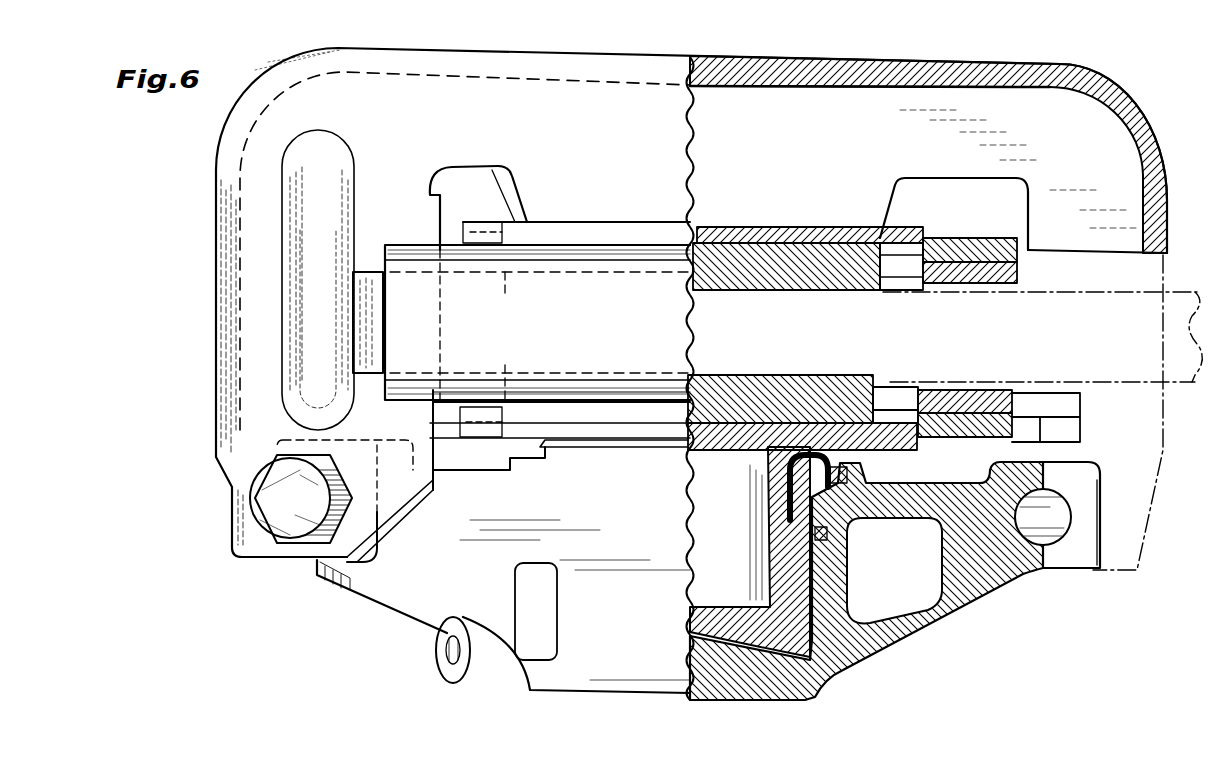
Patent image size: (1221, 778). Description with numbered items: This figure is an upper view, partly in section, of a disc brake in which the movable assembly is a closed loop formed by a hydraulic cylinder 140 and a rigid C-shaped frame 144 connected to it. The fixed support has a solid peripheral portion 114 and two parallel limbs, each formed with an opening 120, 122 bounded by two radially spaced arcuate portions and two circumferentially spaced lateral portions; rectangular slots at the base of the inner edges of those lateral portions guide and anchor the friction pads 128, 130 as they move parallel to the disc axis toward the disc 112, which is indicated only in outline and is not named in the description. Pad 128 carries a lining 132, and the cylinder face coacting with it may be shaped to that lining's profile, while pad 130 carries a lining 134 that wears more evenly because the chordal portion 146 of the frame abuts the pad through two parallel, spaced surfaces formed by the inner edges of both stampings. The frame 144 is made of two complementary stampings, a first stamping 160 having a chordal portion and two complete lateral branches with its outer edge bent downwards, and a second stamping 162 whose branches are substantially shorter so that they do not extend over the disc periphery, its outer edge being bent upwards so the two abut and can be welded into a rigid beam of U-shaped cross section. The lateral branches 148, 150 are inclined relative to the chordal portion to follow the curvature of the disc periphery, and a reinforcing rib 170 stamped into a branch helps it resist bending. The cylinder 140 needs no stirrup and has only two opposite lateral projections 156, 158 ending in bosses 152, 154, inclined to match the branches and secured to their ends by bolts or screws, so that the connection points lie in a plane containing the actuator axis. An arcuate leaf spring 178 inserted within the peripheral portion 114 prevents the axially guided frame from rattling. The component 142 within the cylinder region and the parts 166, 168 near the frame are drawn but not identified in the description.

The shaft 112 is at (1187, 378).
The solid peripheral portion 114 is at (660, 336).
The opening 120 is at (902, 395).
The opening 122 is at (906, 278).
The friction pad 128 is at (905, 448).
The friction pad 130 is at (912, 235).
The lining 132 is at (855, 380).
The lining 134 is at (836, 283).
The hydraulic cylinder 140 is at (503, 541).
The lever 142 is at (767, 615).
The rigid C-shaped frame 144 is at (1124, 95).
The chordal portion 146 is at (868, 95).
The lateral branch 148 is at (240, 242).
The lateral branch 150 is at (1150, 273).
The boss 152 is at (358, 562).
The boss 154 is at (1077, 556).
The lateral projection 156 is at (408, 612).
The lateral projection 158 is at (958, 607).
The first stamping 160 is at (598, 155).
The second stamping 162 is at (771, 155).
The bracket 166 is at (471, 176).
The bracket 168 is at (930, 190).
The reinforcing rib 170 is at (300, 308).
The arcuate leaf spring 178 is at (366, 272).